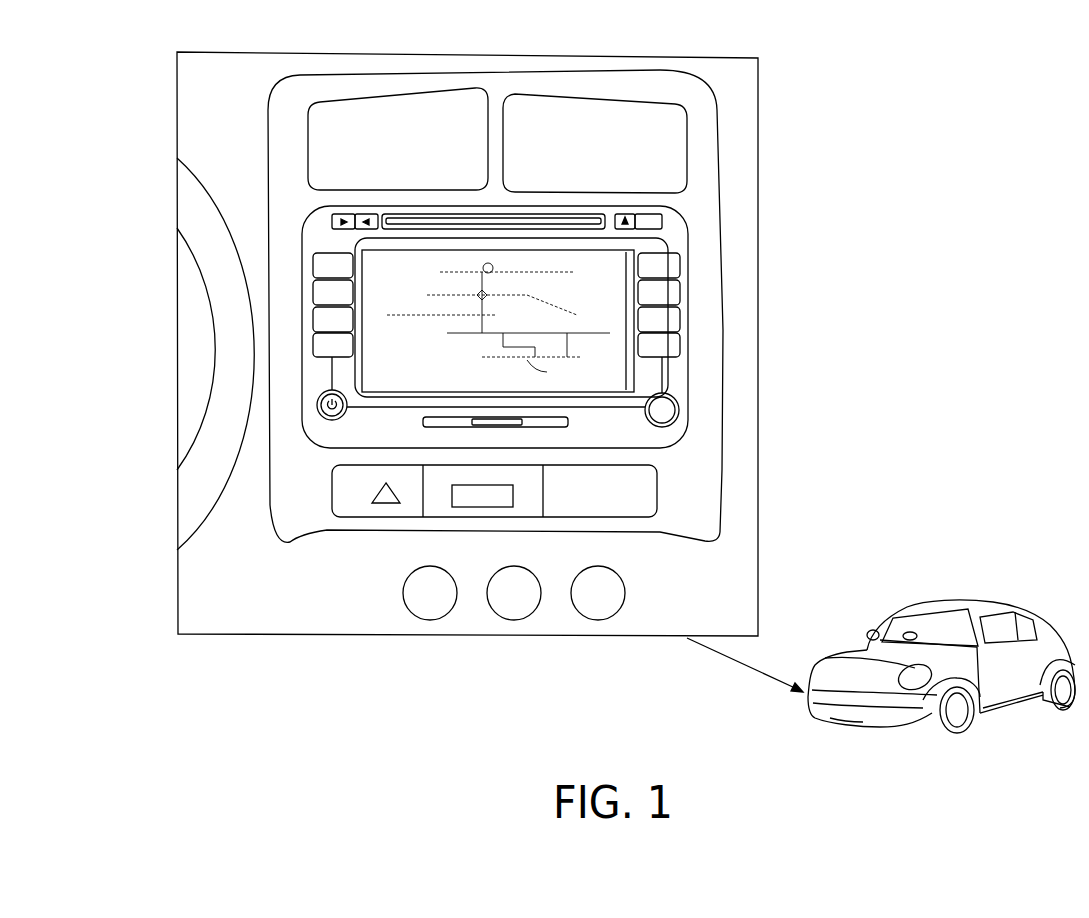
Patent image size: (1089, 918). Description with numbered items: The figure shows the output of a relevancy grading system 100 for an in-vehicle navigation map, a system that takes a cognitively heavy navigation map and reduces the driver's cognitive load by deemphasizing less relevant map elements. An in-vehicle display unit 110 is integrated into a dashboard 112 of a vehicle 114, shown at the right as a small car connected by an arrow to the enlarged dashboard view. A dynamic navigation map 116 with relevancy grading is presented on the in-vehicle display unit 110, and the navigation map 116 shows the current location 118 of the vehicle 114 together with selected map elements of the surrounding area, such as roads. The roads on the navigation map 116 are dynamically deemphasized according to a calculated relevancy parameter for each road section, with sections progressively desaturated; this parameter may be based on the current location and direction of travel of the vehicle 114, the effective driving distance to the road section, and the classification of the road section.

The relevancy grading system 100 is at (976, 113).
The in-vehicle display unit 110 is at (693, 263).
The dashboard 112 is at (698, 148).
The vehicle 114 is at (952, 605).
The navigation map 116 is at (368, 260).
The current location 118 is at (448, 346).